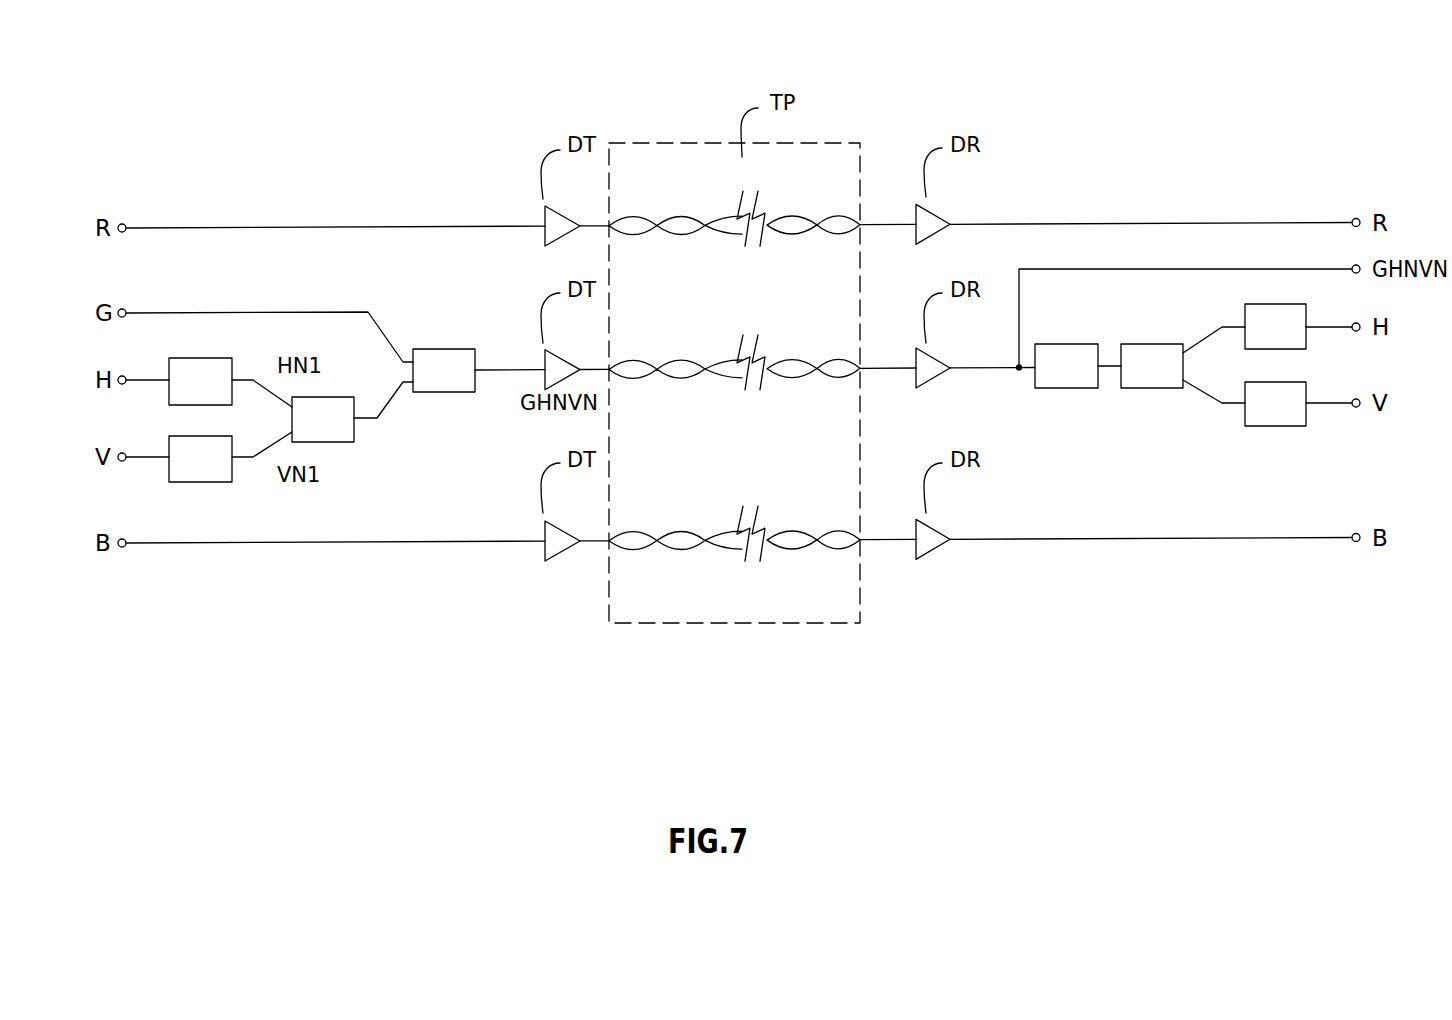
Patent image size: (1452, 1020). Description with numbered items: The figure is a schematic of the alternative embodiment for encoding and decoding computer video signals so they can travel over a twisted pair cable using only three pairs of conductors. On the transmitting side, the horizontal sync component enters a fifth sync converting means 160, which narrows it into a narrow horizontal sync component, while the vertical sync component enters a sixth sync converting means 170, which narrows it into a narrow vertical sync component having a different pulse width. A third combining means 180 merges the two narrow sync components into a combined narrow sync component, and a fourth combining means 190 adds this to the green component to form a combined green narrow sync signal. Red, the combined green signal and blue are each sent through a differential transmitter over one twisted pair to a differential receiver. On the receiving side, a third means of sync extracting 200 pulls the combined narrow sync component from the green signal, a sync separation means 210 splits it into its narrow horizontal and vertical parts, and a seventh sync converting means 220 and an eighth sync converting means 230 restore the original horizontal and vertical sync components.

The fifth sync converting means 160 is at (195, 370).
The sixth sync converting means 170 is at (202, 470).
The third combining means 180 is at (328, 435).
The fourth combining means 190 is at (423, 392).
The third means of sync extracting 200 is at (1076, 380).
The sync separation means 210 is at (1163, 380).
The seventh sync converting means 220 is at (1295, 340).
The eighth sync converting means 230 is at (1283, 418).